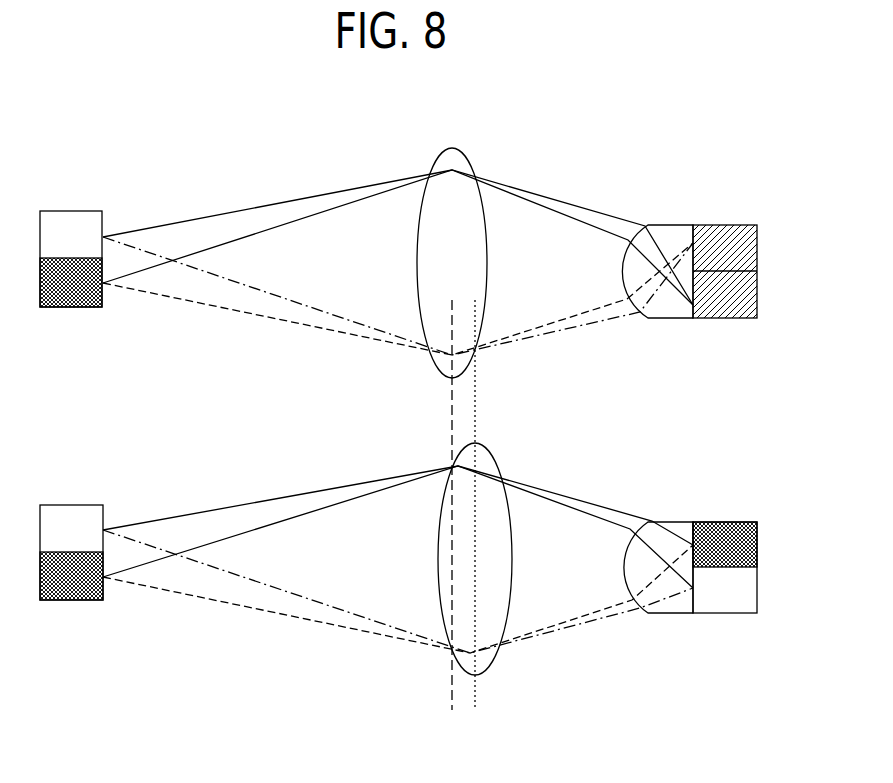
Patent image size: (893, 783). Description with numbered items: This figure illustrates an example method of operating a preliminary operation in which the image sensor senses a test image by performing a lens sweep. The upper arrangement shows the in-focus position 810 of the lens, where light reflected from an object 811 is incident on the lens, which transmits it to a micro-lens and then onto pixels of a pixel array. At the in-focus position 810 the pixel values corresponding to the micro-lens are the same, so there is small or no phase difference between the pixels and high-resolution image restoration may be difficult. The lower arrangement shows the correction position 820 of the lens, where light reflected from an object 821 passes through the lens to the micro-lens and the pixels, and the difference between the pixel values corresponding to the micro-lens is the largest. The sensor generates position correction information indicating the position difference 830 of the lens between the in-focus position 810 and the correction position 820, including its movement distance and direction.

The in-focus position 810 is at (451, 395).
The object 811 is at (68, 211).
The correction position 820 is at (474, 430).
The object 821 is at (72, 505).
The position difference 830 is at (408, 698).